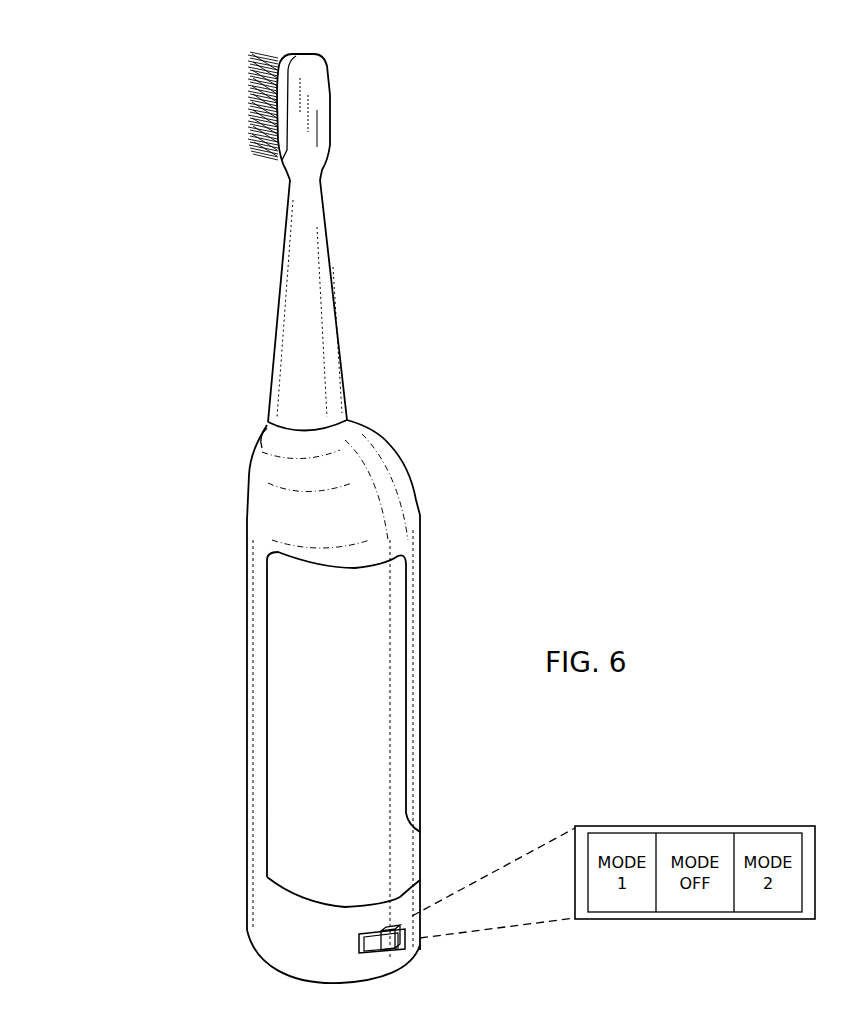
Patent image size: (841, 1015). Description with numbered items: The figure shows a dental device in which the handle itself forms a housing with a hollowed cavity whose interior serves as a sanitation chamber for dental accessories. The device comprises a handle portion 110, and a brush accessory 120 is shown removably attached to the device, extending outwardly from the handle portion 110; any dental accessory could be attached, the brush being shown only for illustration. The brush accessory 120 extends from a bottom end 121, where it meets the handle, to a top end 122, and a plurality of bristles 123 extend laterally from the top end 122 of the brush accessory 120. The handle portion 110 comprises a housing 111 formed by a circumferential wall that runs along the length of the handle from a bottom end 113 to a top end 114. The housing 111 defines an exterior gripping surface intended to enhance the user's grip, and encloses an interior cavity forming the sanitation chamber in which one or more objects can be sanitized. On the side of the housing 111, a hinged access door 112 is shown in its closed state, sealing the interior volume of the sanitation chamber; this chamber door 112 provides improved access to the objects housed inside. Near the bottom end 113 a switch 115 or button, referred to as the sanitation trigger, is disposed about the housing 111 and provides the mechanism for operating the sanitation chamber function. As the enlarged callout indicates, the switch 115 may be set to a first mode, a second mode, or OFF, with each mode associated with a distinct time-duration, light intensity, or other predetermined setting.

The handle portion 110 is at (170, 434).
The housing 111 is at (416, 519).
The hinged access door 112 is at (400, 597).
The bottom end 113 is at (283, 955).
The top end 114 is at (262, 447).
The switch 115 is at (398, 946).
The brush accessory 120 is at (170, 422).
The bottom end 121 is at (336, 411).
The top end 122 is at (316, 62).
The bristles 123 is at (250, 160).